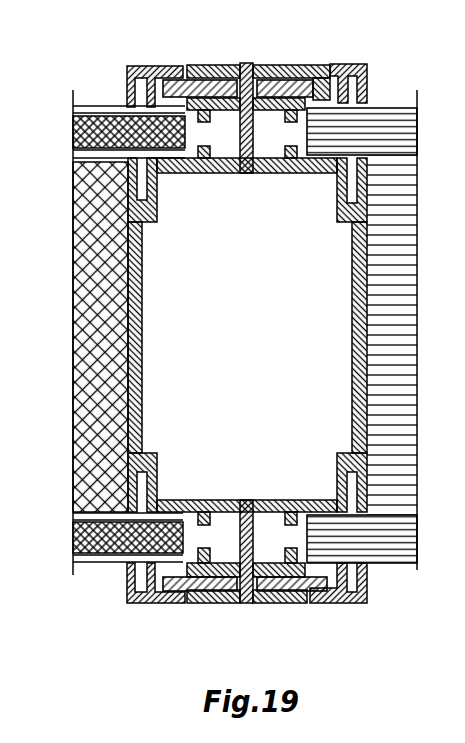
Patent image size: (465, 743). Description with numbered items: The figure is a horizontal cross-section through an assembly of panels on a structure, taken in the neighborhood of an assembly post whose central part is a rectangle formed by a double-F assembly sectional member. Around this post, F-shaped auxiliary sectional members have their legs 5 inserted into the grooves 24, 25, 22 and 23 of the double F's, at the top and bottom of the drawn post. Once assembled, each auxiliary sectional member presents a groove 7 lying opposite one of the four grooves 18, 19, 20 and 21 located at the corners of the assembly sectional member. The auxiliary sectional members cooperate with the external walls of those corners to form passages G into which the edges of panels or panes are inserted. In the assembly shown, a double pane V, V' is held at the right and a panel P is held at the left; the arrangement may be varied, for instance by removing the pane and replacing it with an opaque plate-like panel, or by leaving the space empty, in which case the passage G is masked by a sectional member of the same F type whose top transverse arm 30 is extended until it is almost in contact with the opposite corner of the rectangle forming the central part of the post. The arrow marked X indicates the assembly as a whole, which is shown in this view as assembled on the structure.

The leg 5 is at (218, 80).
The groove 7 is at (352, 588).
The groove 18 is at (145, 483).
The groove 19 is at (352, 478).
The groove 20 is at (150, 197).
The groove 21 is at (350, 188).
The groove 22 is at (197, 603).
The groove 23 is at (263, 603).
The groove 24 is at (241, 80).
The groove 25 is at (262, 80).
The top transverse arm 30 is at (366, 84).
The passage G is at (125, 125).
The panel P is at (80, 210).
The pane V is at (378, 539).
The pane V' is at (382, 131).
The window assembly X is at (446, 421).